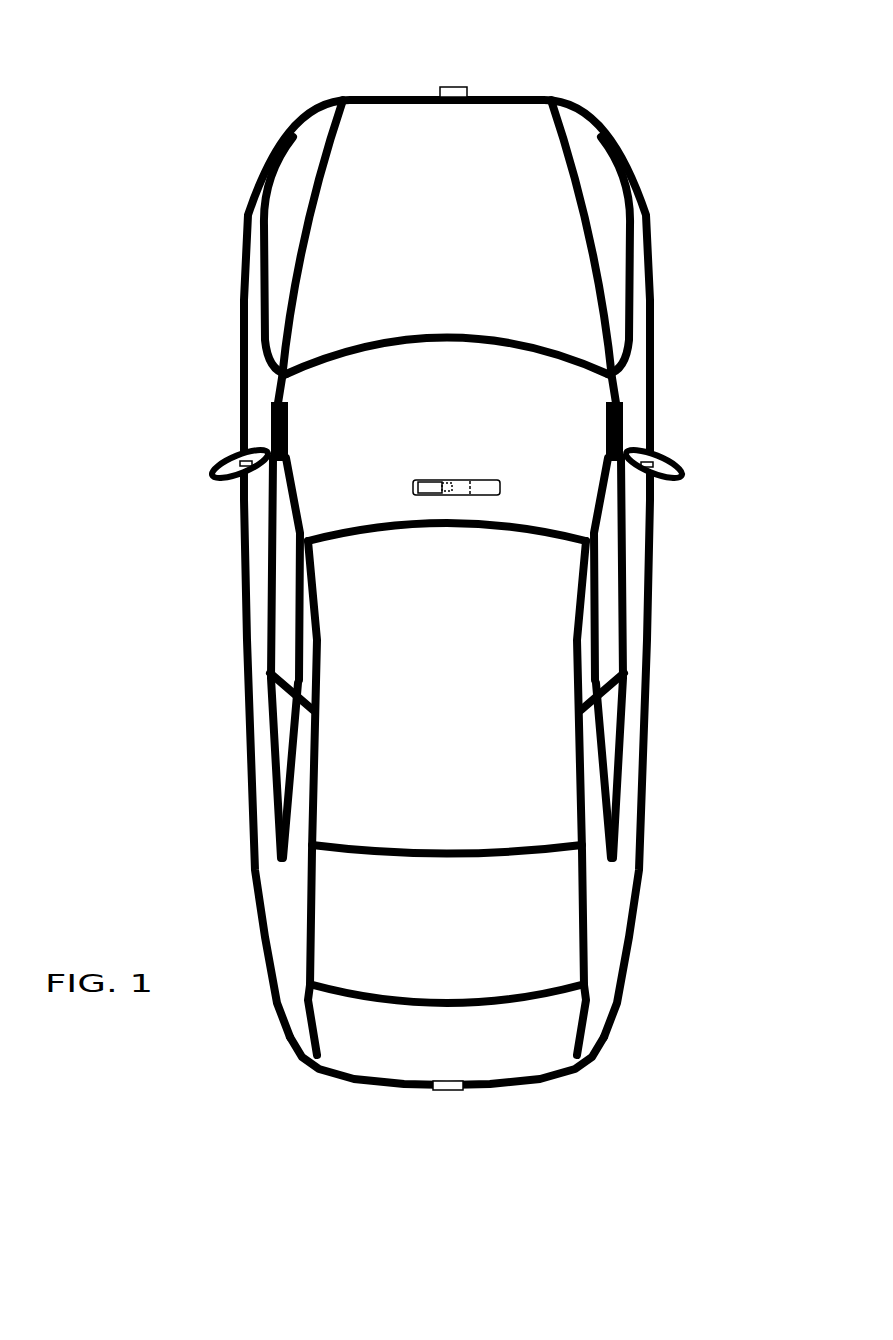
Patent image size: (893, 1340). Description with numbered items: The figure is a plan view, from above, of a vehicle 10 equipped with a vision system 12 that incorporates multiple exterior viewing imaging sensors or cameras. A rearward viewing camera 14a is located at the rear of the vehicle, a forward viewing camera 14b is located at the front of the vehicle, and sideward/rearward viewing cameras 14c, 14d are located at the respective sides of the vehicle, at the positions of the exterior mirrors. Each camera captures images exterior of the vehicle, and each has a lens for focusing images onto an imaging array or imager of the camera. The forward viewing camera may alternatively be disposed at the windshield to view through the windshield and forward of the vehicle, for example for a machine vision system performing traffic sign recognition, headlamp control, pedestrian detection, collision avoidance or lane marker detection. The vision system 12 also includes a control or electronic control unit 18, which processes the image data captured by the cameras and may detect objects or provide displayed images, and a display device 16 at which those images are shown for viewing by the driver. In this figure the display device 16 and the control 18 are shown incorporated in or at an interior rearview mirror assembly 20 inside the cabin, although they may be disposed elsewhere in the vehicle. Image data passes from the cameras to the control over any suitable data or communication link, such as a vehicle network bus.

The vehicle 10 is at (192, 188).
The vision system 12 is at (390, 1116).
The rearward viewing camera 14a is at (448, 1089).
The forward viewing camera 14b is at (457, 88).
The sideward/rearward viewing camera 14c is at (233, 458).
The sideward/rearward viewing camera 14d is at (660, 458).
The display device 16 is at (432, 482).
The electronic control unit 18 is at (452, 475).
The interior rearview mirror assembly 20 is at (498, 480).